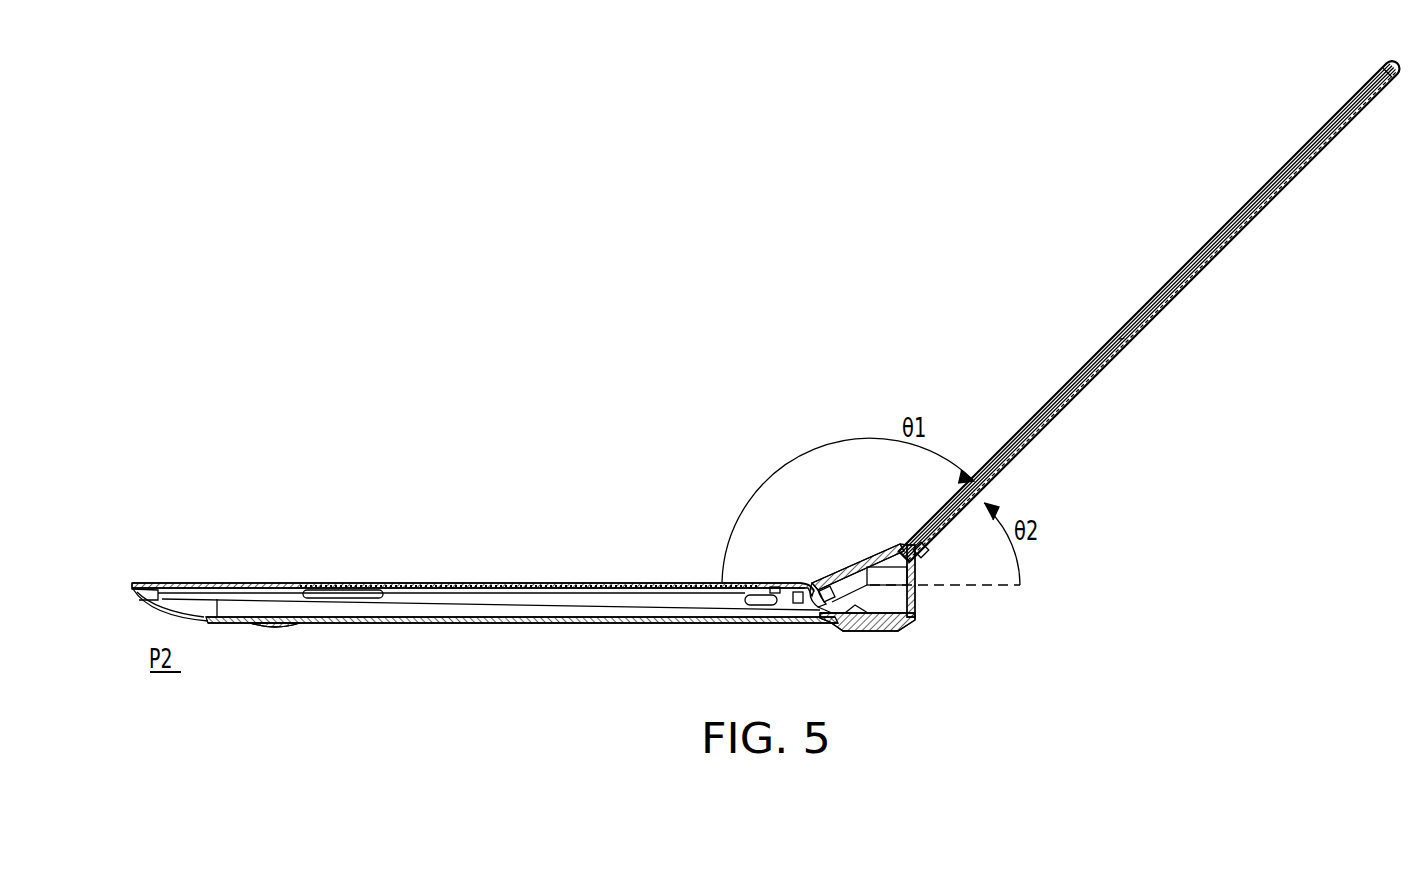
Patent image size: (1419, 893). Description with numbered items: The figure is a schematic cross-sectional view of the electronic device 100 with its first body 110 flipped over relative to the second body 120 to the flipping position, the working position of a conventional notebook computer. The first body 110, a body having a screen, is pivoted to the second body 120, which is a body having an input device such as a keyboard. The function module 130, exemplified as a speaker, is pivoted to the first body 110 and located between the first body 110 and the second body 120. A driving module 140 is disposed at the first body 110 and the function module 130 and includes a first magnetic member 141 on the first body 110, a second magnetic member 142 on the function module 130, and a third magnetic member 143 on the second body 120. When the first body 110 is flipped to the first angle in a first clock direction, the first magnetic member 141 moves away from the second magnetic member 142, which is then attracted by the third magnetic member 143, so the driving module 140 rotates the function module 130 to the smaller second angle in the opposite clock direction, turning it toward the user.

The electronic device 100 is at (406, 216).
The first body 110 is at (1257, 229).
The second body 120 is at (292, 582).
The function module 130 is at (860, 558).
The driving module 140 is at (214, 127).
The first magnetic member 141 is at (935, 553).
The second magnetic member 142 is at (820, 576).
The third magnetic member 143 is at (800, 606).